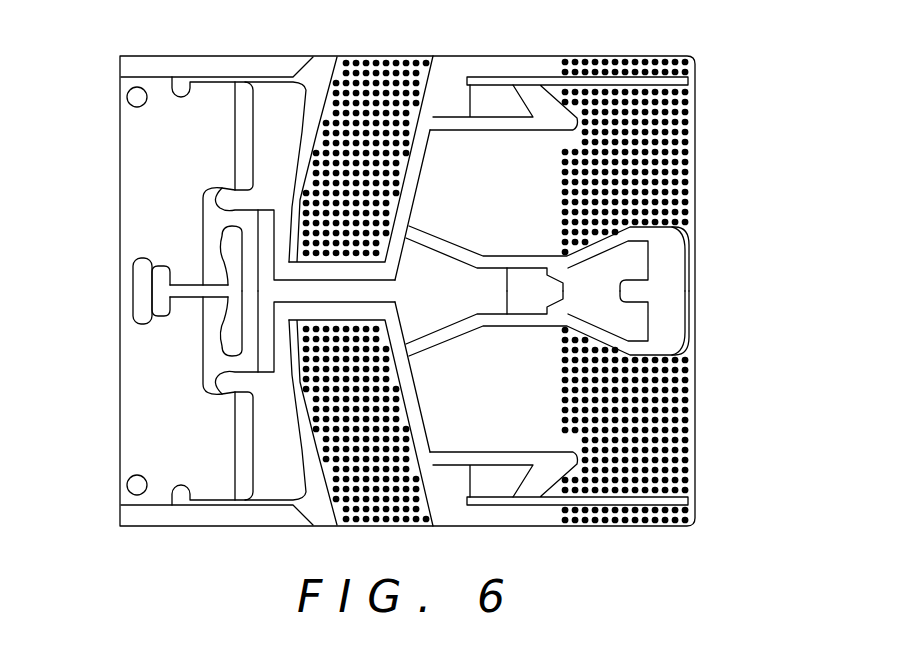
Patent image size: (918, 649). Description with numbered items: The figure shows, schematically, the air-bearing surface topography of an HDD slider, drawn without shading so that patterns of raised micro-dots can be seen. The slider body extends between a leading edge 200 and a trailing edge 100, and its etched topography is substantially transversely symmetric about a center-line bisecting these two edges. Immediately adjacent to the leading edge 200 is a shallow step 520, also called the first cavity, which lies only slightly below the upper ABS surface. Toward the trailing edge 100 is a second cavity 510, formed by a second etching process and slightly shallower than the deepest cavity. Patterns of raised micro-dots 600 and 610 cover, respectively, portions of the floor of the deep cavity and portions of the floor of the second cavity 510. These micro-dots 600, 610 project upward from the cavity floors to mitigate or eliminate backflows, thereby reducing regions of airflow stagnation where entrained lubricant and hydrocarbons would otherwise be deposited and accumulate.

The trailing edge 100 is at (697, 404).
The leading edge 200 is at (118, 427).
The second cavity 510 is at (683, 113).
The shallow step 520 is at (137, 147).
The raised micro-dots 600 is at (369, 73).
The raised micro-dots 610 is at (695, 176).